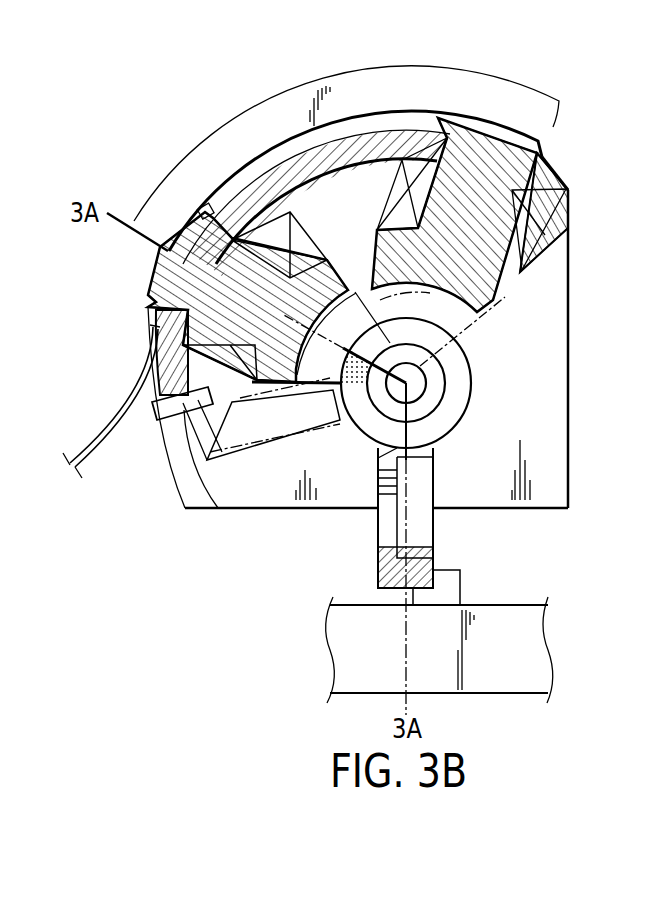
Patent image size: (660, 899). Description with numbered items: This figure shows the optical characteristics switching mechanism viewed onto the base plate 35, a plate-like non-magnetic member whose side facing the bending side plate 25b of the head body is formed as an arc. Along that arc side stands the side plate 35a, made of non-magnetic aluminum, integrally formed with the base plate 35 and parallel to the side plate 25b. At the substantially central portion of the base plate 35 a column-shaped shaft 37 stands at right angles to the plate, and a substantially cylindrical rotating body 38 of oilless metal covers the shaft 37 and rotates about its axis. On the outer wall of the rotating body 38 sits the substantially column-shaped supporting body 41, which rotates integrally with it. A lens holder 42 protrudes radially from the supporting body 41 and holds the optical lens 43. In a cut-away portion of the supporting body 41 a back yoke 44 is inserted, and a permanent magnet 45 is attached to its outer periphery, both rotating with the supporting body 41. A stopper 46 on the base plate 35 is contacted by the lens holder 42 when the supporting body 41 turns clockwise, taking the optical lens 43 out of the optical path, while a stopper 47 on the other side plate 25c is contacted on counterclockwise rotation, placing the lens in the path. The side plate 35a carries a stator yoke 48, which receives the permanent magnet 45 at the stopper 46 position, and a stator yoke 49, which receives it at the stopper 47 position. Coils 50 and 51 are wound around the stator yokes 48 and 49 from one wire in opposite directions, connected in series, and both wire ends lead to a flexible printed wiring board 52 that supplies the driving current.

The side plate 25b is at (326, 85).
The other side plate 25c is at (340, 648).
The base plate 35 is at (560, 368).
The side plate 35a is at (257, 182).
The shaft 37 is at (422, 392).
The rotating body 38 is at (413, 412).
The supporting body 41 is at (460, 378).
The lens holder 42 is at (390, 565).
The optical lens 43 is at (410, 537).
The back yoke 44 is at (383, 340).
The permanent magnet 45 is at (357, 300).
The stopper 46 is at (160, 408).
The stopper 47 is at (445, 585).
The stator yoke 48 is at (497, 158).
The stator yoke 49 is at (187, 275).
The coil 50 is at (530, 244).
The coil 51 is at (290, 242).
The flexible printed wiring board 52 is at (135, 418).